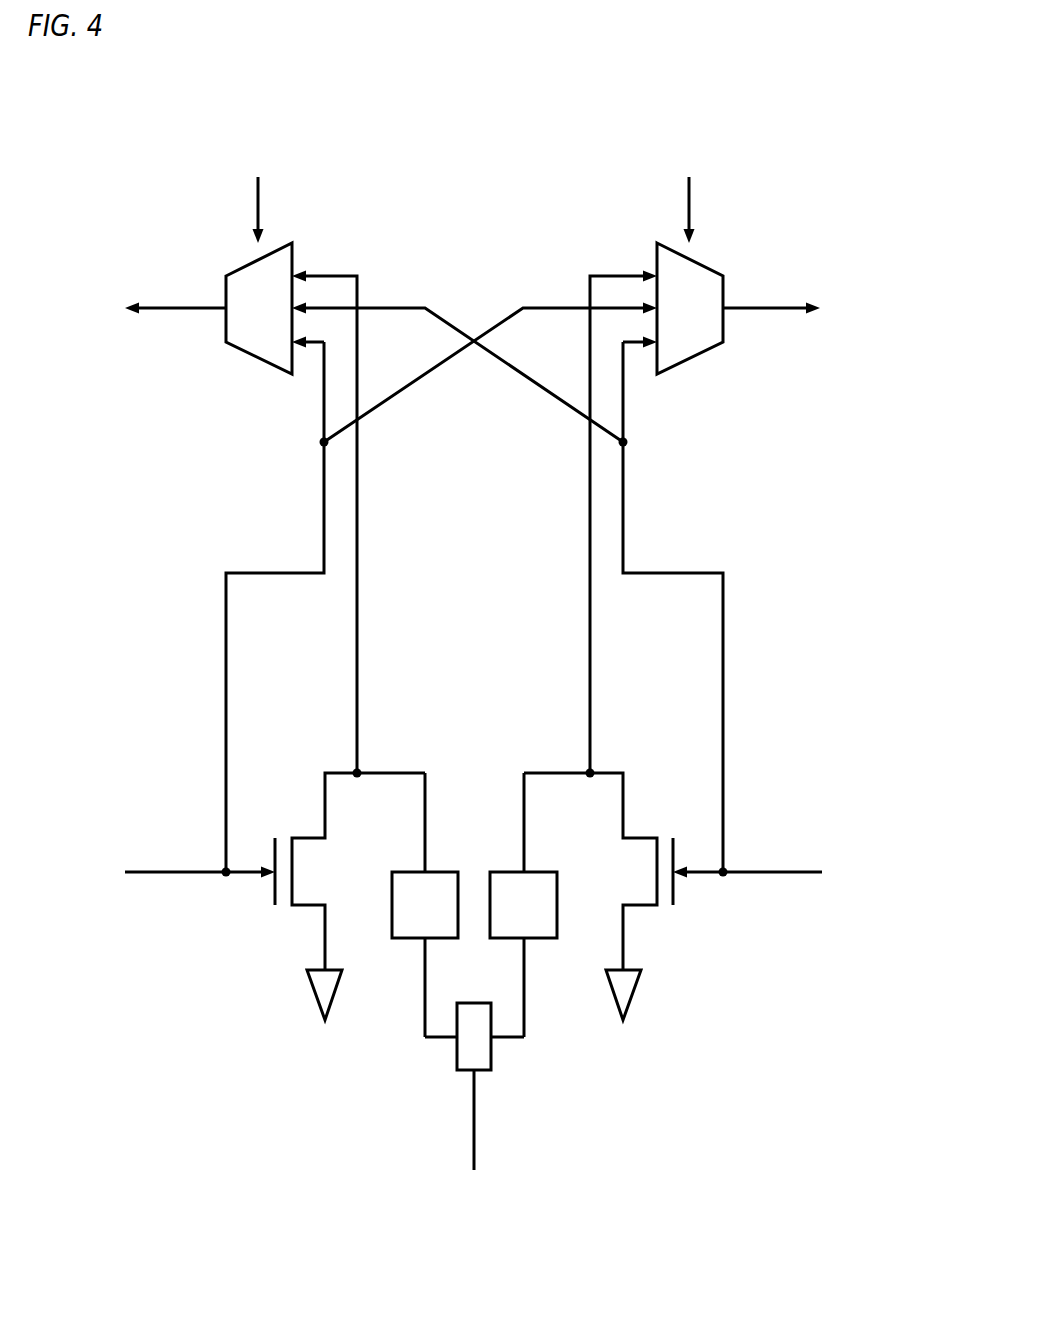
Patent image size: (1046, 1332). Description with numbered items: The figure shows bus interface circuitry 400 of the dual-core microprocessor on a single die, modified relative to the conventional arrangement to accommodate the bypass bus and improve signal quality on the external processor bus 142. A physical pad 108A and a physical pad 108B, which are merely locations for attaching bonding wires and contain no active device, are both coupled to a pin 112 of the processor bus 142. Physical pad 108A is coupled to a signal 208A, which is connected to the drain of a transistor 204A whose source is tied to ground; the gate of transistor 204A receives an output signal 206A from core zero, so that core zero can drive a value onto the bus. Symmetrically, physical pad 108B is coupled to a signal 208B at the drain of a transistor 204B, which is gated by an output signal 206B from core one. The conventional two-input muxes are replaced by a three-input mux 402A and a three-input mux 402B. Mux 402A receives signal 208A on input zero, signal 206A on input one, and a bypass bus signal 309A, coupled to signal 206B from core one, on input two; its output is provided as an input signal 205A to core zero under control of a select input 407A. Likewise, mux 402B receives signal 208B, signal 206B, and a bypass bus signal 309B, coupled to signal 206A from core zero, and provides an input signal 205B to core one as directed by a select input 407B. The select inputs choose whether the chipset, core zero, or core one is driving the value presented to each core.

The bus interface circuitry 400 is at (791, 60).
The select input 407A is at (260, 225).
The select input 407B is at (687, 225).
The 3-input mux 402A is at (259, 308).
The 3-input mux 402B is at (690, 308).
The input signal 205A is at (158, 307).
The input signal 205B is at (788, 307).
The bypass bus signal 309A is at (395, 306).
The bypass bus signal 309B is at (555, 306).
The signal 208A is at (359, 541).
The signal 208B is at (588, 541).
The output signal 206A is at (158, 870).
The output signal 206B is at (790, 870).
The transistor 204A is at (350, 896).
The transistor 204B is at (598, 896).
The physical pad 108A is at (425, 905).
The physical pad 108B is at (523, 905).
The pin 112 is at (474, 1036).
The external processor bus 142 is at (476, 1119).